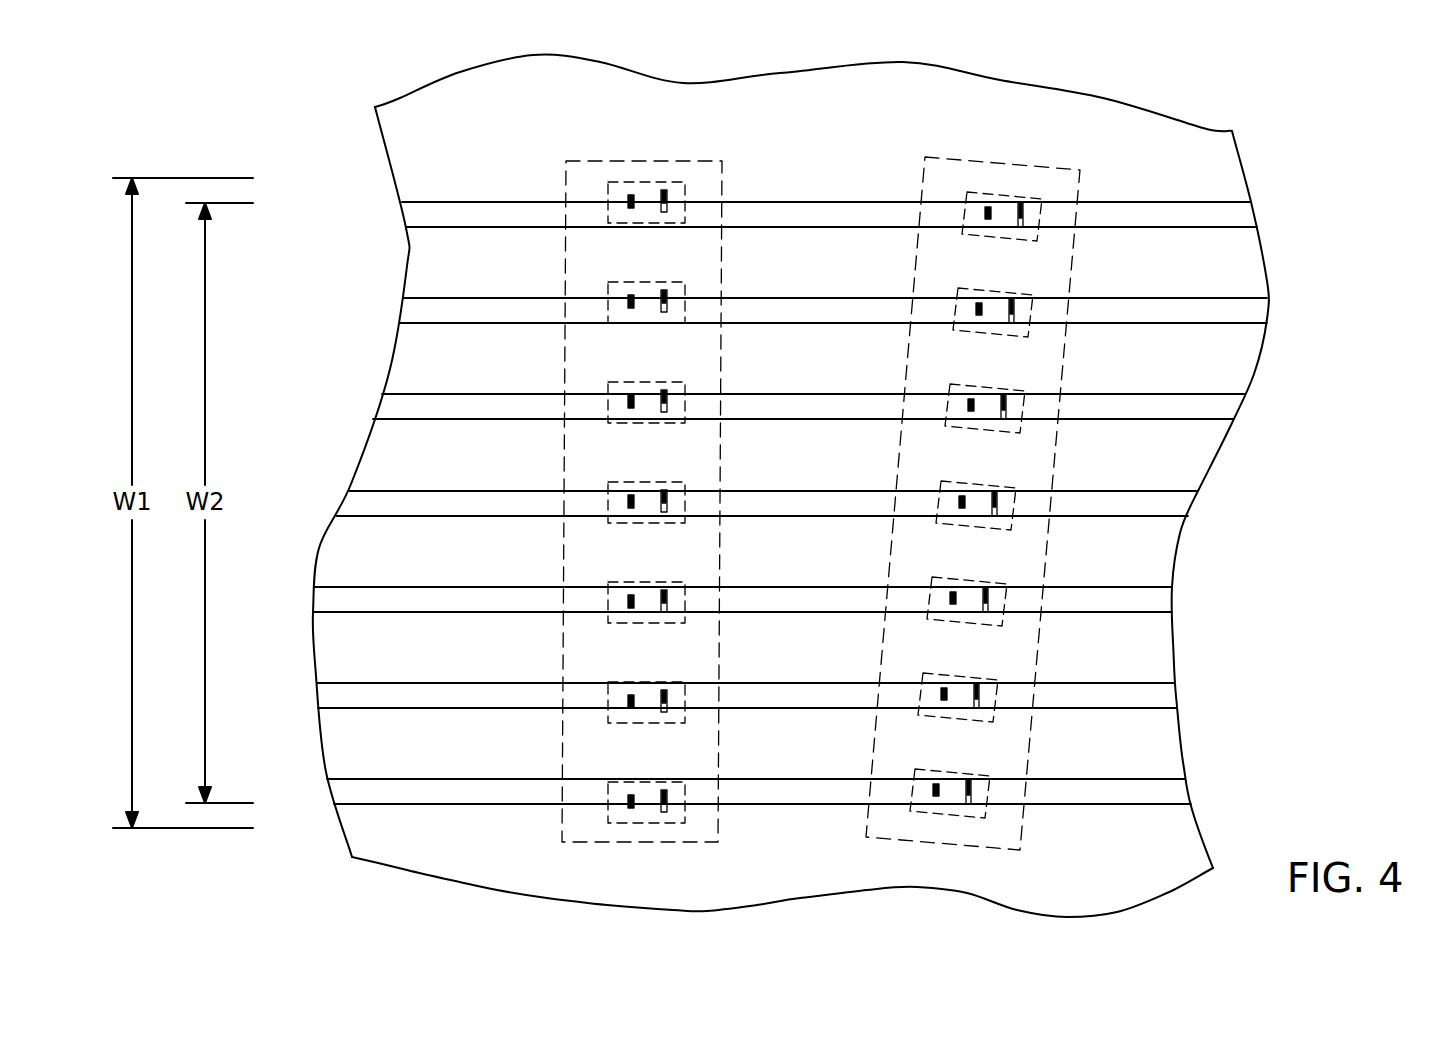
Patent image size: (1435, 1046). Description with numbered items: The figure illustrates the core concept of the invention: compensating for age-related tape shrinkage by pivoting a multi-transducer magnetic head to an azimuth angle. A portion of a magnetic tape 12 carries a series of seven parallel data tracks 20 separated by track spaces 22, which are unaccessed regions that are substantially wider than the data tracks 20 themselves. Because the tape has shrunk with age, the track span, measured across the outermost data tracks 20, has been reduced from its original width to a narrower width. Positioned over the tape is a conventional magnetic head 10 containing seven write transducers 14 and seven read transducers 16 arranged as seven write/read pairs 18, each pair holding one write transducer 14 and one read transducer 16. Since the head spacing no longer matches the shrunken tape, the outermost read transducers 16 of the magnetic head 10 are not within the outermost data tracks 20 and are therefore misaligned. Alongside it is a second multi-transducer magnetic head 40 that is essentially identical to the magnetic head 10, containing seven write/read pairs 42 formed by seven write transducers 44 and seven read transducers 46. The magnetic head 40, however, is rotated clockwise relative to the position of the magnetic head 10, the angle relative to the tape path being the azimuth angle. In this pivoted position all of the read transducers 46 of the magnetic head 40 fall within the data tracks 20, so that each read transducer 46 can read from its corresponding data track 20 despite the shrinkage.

The multi-transducer magnetic head 10 is at (718, 158).
The magnetic tape 12 is at (1308, 191).
The write transducer 14 is at (665, 212).
The read transducer 16 is at (630, 208).
The write/read pair 18 is at (607, 182).
The data track 20 is at (790, 503).
The track space 22 is at (437, 759).
The multi-transducer magnetic head 40 is at (1075, 168).
The write/read pair 42 is at (967, 192).
The write transducer 44 is at (1021, 227).
The read transducer 46 is at (987, 219).